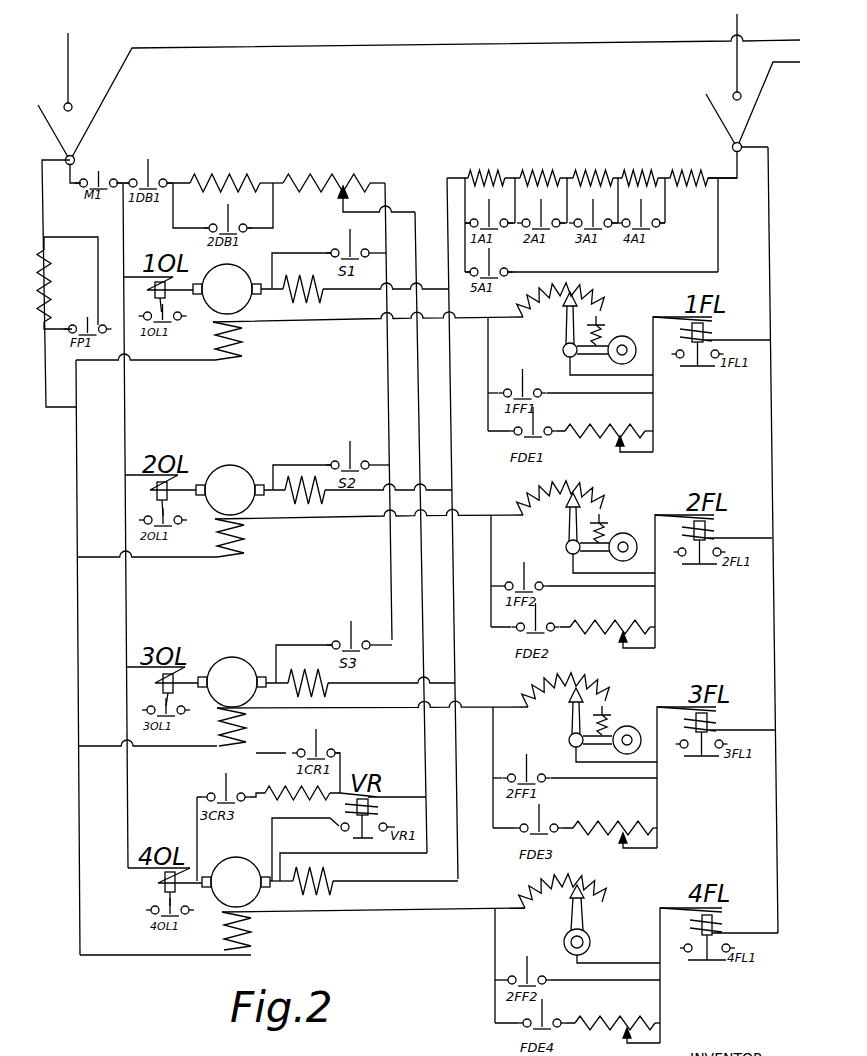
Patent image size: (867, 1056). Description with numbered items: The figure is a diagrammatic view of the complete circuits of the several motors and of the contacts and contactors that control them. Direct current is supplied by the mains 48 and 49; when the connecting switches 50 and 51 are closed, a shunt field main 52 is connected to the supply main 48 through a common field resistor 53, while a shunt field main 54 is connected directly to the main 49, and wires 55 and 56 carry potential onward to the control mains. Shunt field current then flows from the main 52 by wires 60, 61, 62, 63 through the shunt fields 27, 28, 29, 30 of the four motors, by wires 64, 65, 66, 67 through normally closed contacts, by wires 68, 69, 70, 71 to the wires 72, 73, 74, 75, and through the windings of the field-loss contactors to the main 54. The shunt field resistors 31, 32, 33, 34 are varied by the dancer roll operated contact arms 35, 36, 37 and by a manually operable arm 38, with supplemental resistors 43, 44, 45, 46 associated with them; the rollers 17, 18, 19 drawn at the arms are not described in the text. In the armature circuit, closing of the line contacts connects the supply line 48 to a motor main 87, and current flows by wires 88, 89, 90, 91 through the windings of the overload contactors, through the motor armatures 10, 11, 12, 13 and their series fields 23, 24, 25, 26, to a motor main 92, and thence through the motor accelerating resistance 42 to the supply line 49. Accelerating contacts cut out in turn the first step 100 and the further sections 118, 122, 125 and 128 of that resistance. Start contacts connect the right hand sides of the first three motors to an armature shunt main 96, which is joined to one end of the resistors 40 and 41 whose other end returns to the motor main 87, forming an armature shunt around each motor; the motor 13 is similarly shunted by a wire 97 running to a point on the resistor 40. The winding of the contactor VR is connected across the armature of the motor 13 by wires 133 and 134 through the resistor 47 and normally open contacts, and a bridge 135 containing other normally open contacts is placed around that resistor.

The supply main 48 is at (63, 60).
The connecting switch 50 is at (50, 128).
The wire 55 is at (100, 102).
The supply main 49 is at (734, 25).
The wire 56 is at (789, 64).
The connecting switch 51 is at (716, 114).
The shunt field main 54 is at (772, 470).
The resistor 41 is at (228, 178).
The resistor 40 is at (312, 178).
The motor accelerating resistance 42 is at (462, 172).
The first step of starting resistance 100 is at (488, 170).
The section of accelerating resistance 118 is at (542, 170).
The section of accelerating resistance 122 is at (594, 169).
The accelerating resistance section 125 is at (640, 170).
The accelerating resistance section 128 is at (690, 170).
The common field resistor 53 is at (50, 290).
The wire 88 is at (122, 268).
The motor main 87 is at (124, 411).
The wire 89 is at (123, 474).
The wire 90 is at (126, 666).
The wire 91 is at (139, 871).
The shunt field main 52 is at (74, 500).
The wire 60 is at (165, 364).
The wire 61 is at (170, 561).
The wire 62 is at (172, 750).
The wire 63 is at (148, 958).
The motor 10 is at (227, 289).
The motor 11 is at (230, 490).
The motor 12 is at (232, 682).
The motor 13 is at (236, 882).
The series field 23 is at (322, 293).
The series field 24 is at (323, 494).
The series field 25 is at (323, 687).
The series field 26 is at (334, 886).
The shunt field 27 is at (243, 339).
The shunt field 28 is at (245, 537).
The shunt field 29 is at (249, 723).
The shunt field 30 is at (253, 931).
The armature shunt main 96 is at (386, 352).
The wire 97 is at (417, 352).
The motor main 92 is at (452, 452).
The wire 64 is at (491, 350).
The wire 65 is at (494, 549).
The wire 66 is at (496, 739).
The wire 67 is at (498, 940).
The shunt field resistor 31 is at (545, 306).
The shunt field resistor 32 is at (540, 506).
The shunt field resistor 33 is at (546, 700).
The shunt field resistor 34 is at (544, 901).
The dancer roll operated contact arm 35 is at (566, 338).
The dancer roll operated contact arm 36 is at (570, 535).
The dancer roll operated contact arm 37 is at (573, 714).
The manually operable arm 38 is at (572, 916).
The follower roller 17 is at (618, 335).
The follower roller 18 is at (619, 532).
The follower roller 19 is at (623, 725).
The supplemental resistor 43 is at (594, 438).
The supplemental resistor 44 is at (596, 634).
The supplemental resistor 45 is at (602, 835).
The supplemental resistor 46 is at (605, 1031).
The wire 68 is at (630, 395).
The wire 69 is at (632, 592).
The wire 70 is at (635, 785).
The wire 71 is at (646, 981).
The wire 72 is at (653, 315).
The wire 73 is at (655, 513).
The wire 74 is at (657, 705).
The wire 75 is at (660, 906).
The resistor 47 is at (276, 790).
The wire 133 is at (275, 836).
The wire 134 is at (196, 829).
The bridge 135 is at (344, 756).